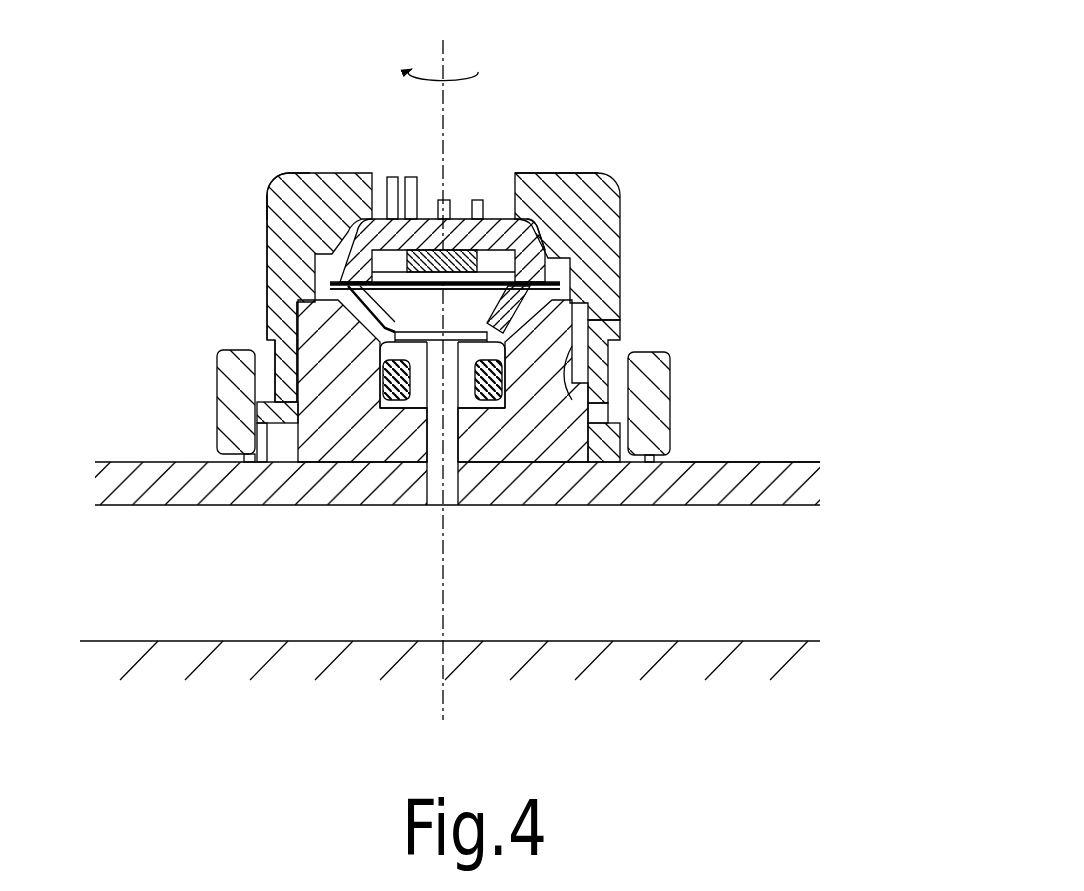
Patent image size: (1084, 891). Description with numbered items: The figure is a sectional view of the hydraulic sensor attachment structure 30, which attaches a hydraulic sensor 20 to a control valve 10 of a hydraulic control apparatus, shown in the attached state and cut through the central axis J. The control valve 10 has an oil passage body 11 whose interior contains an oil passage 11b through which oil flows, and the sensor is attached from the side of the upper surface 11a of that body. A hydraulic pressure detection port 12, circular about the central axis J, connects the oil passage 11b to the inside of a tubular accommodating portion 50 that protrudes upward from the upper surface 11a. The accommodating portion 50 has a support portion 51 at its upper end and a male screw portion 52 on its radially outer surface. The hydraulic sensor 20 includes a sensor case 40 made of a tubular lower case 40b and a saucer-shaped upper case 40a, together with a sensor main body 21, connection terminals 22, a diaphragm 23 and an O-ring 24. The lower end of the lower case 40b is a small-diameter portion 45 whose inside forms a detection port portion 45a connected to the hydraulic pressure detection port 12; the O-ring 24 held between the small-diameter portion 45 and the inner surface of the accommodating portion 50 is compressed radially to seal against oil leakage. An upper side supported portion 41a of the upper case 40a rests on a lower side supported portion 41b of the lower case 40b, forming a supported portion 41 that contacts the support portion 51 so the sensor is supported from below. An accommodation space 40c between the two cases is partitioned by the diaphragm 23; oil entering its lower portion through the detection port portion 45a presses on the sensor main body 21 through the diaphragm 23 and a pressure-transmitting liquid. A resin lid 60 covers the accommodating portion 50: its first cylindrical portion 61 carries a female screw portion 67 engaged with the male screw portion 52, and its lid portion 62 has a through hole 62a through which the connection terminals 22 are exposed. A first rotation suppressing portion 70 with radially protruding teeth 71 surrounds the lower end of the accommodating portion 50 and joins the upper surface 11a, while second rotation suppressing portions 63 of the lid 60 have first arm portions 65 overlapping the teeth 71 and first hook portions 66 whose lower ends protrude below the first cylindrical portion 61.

The hydraulic sensor attachment structure 30 is at (738, 104).
The central axis J is at (447, 56).
The control valve 10 is at (132, 448).
The oil passage body 11 is at (752, 500).
The upper surface 11a is at (772, 461).
The oil passage 11b is at (710, 606).
The hydraulic pressure detection port 12 is at (442, 412).
The hydraulic sensor 20 is at (548, 230).
The sensor main body 21 is at (422, 250).
The connection terminals 22 is at (430, 250).
The diaphragm 23 is at (358, 332).
The O-ring 24 is at (495, 402).
The sensor case 40 is at (569, 340).
The upper case 40a is at (546, 244).
The lower case 40b is at (562, 326).
The accommodation space 40c is at (572, 346).
The supported portion 41 is at (752, 232).
The upper side supported portion 41a is at (558, 283).
The lower side supported portion 41b is at (560, 305).
The small-diameter portion 45 is at (480, 410).
The detection port portion 45a is at (427, 432).
The accommodating portion 50 is at (601, 340).
The support portion 51 is at (266, 200).
The male screw portion 52 is at (283, 378).
The lid 60 is at (500, 325).
The first cylindrical portion 61 is at (292, 272).
The lid portion 62 is at (326, 174).
The through hole 62a is at (503, 172).
The second rotation suppressing portions 63 is at (449, 380).
The first arm portion 65 is at (272, 412).
The first hook portion 66 is at (222, 392).
The female screw portion 67 is at (610, 420).
The first rotation suppressing portion 70 is at (449, 358).
The teeth 71 is at (263, 462).